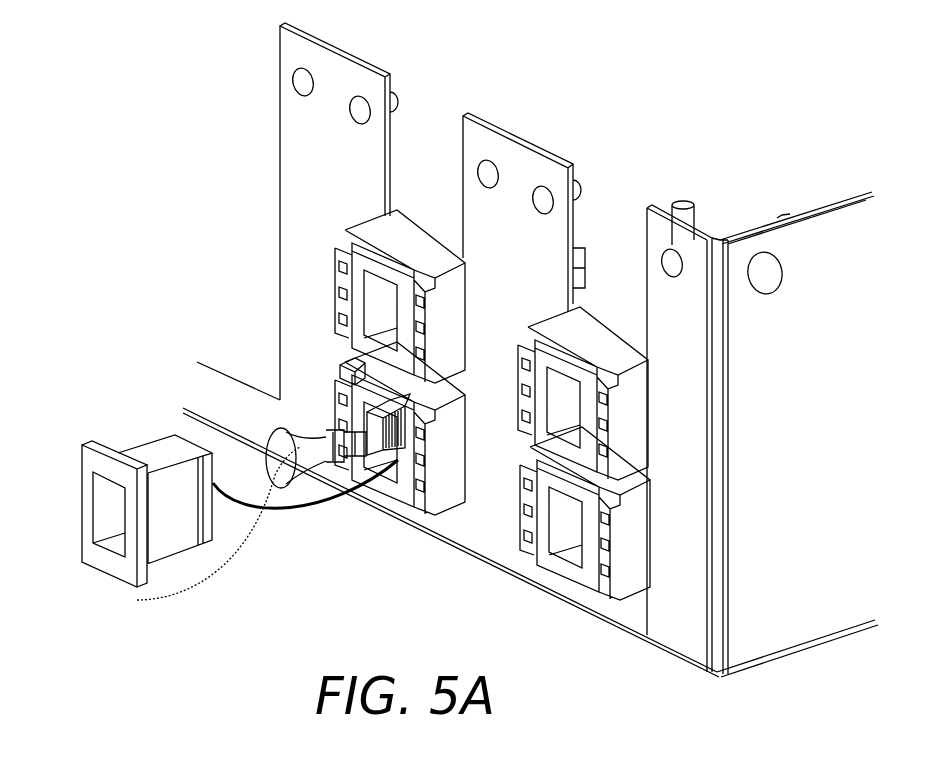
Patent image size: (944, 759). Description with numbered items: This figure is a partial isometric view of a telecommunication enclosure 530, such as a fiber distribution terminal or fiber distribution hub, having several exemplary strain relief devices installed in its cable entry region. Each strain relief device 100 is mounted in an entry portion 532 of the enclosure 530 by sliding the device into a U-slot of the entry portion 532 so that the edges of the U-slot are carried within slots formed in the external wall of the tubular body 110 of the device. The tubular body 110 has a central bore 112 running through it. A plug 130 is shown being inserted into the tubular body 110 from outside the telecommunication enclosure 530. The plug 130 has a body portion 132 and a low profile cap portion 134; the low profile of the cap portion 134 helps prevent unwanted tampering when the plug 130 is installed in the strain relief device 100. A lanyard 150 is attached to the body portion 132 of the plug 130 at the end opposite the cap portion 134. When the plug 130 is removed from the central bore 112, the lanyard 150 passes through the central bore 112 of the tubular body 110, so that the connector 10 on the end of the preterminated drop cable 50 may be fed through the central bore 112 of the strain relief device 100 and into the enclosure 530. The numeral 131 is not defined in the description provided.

The connector 10 is at (305, 424).
The preterminated drop cable 50 is at (222, 575).
The strain relief device 100 is at (322, 232).
The tubular body 110 is at (448, 502).
The central bore 112 is at (340, 366).
The plug 130 is at (283, 504).
The adapter front face 131 is at (110, 568).
The body portion 132 is at (166, 450).
The cap portion 134 is at (82, 478).
The lanyard 150 is at (314, 506).
The telecommunication enclosure 530 is at (750, 158).
The entry portion 532 is at (432, 118).